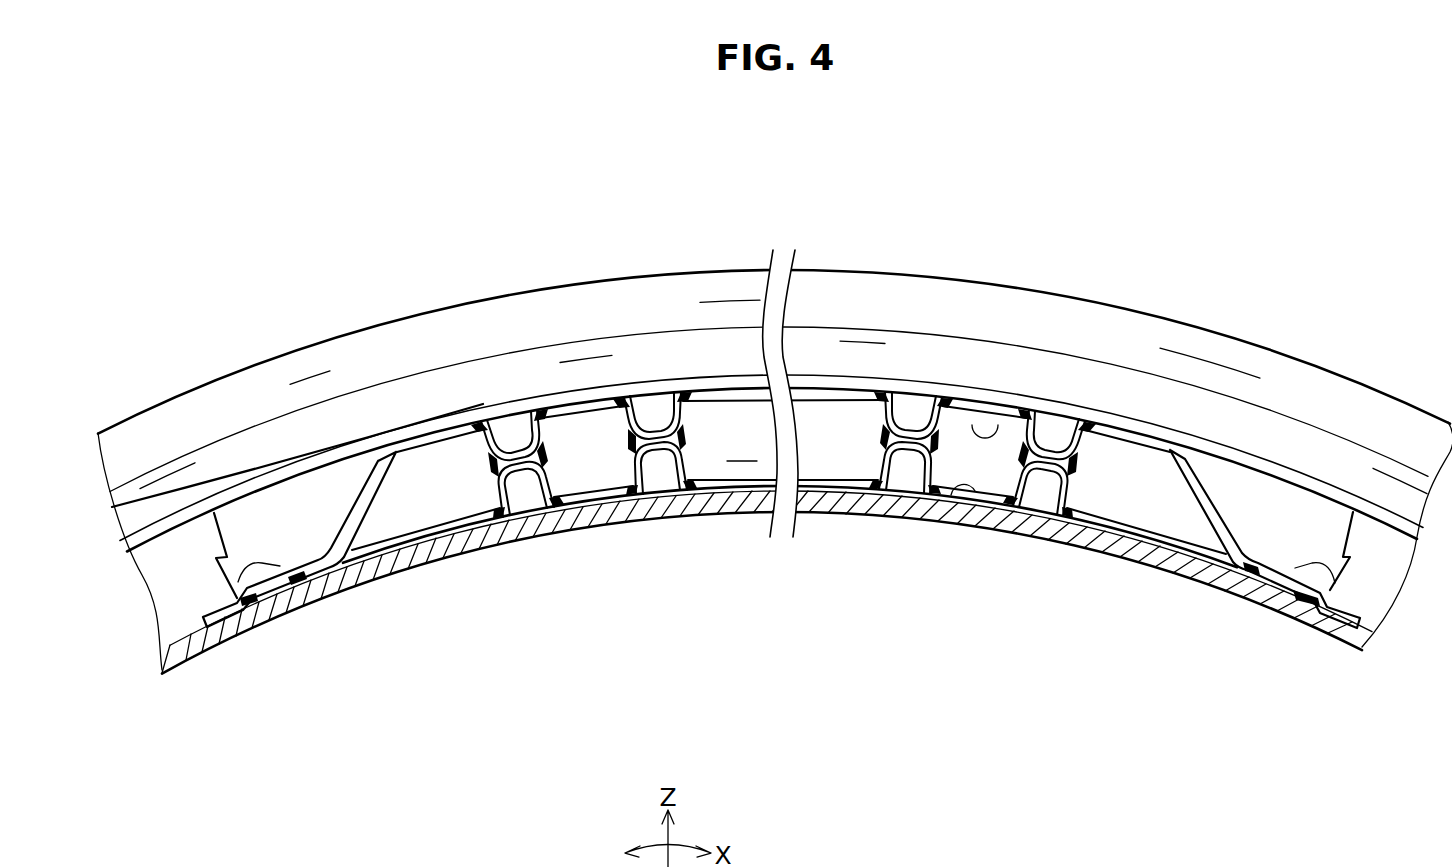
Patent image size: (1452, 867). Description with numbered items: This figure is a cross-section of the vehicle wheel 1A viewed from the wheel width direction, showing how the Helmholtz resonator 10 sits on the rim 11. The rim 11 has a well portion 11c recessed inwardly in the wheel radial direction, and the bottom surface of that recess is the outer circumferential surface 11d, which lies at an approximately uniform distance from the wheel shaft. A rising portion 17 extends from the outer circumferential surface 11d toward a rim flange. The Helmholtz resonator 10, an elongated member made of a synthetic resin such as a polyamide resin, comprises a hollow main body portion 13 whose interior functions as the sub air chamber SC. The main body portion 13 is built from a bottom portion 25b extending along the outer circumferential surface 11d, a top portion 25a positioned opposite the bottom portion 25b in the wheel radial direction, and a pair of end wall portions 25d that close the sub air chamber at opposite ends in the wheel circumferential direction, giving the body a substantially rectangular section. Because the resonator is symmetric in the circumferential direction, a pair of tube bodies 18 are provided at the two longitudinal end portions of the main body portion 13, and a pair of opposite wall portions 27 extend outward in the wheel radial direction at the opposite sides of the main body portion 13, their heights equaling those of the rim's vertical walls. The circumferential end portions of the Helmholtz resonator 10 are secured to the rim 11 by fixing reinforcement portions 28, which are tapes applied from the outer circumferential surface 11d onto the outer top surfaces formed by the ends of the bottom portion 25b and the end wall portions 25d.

The vehicle wheel 1A is at (1093, 237).
The Helmholtz resonator 10 is at (656, 387).
The rim 11 is at (490, 578).
The well portion 11c is at (632, 510).
The outer circumferential surface 11d is at (190, 630).
The main body portion 13 is at (467, 437).
The rising portion 17 is at (185, 537).
The tube body 18 is at (303, 543).
The top portion 25a is at (1005, 423).
The bottom portion 25b is at (971, 494).
The end wall portions 25d is at (362, 500).
The opposite wall portions 27 is at (247, 517).
The fixing reinforcement portions 28 is at (233, 577).